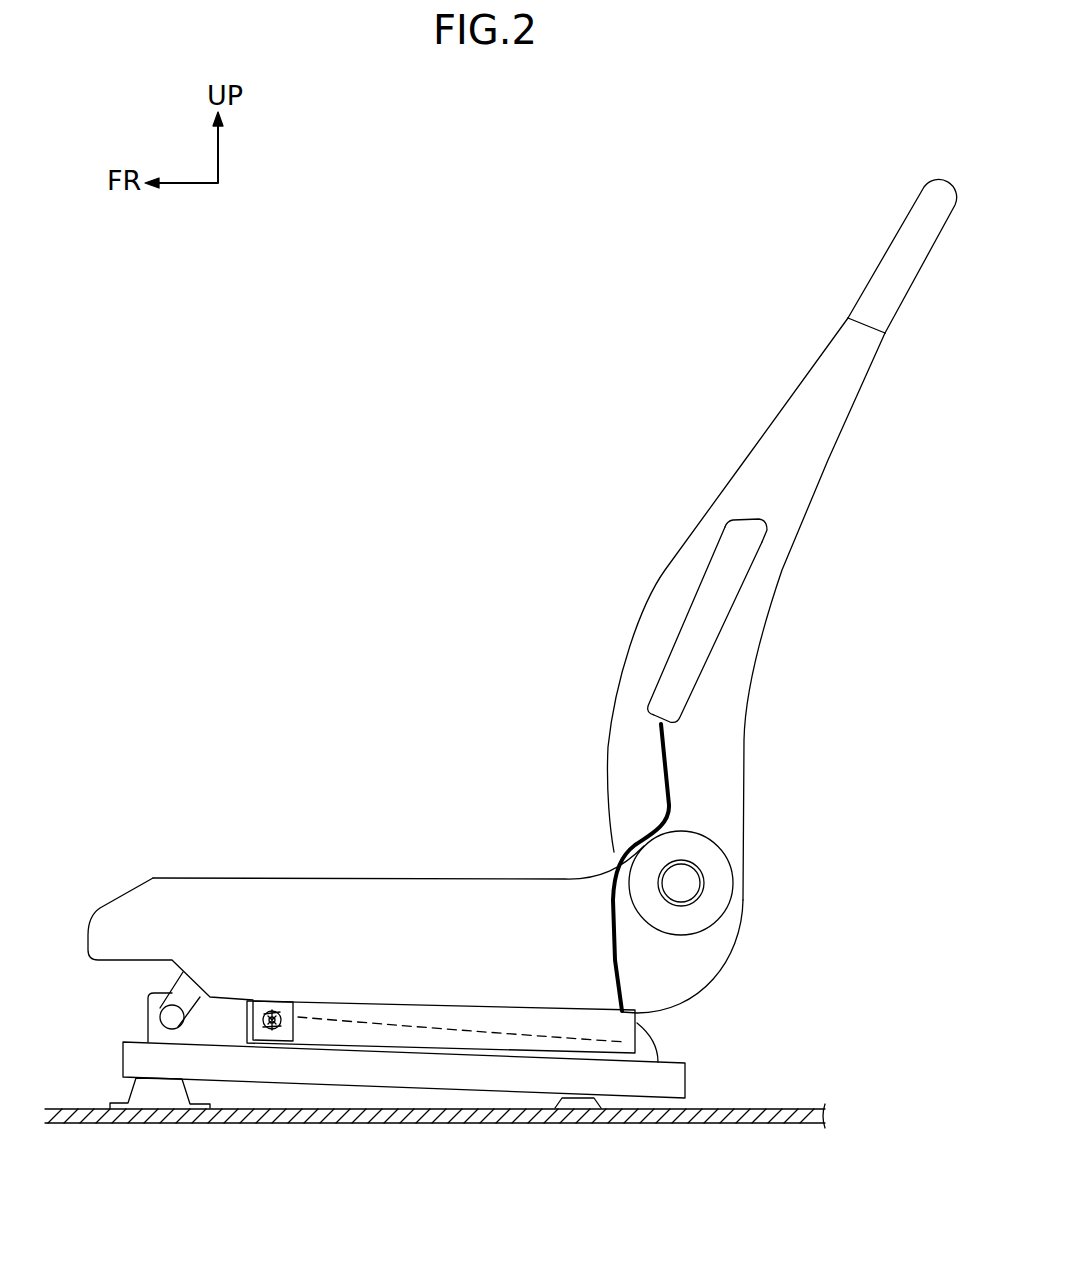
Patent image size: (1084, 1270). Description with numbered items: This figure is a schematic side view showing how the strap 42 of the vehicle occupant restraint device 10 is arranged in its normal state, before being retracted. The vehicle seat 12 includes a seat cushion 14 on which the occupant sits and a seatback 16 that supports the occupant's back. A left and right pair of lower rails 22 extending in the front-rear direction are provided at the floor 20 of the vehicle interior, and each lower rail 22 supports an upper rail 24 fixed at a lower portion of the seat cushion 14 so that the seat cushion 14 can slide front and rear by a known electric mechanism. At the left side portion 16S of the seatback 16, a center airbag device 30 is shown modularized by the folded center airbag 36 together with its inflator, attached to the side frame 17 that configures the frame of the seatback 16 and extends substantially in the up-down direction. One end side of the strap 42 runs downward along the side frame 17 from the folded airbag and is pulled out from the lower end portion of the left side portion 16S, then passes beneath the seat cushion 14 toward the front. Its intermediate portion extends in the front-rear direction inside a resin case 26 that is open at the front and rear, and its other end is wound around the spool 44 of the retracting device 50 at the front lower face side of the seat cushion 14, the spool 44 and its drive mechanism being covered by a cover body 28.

The vehicle occupant restraint device 10 is at (527, 432).
The vehicle seat 12 is at (884, 185).
The seat cushion 14 is at (142, 857).
The seatback 16 is at (845, 467).
The left side portion 16S is at (722, 710).
The side frame 17 is at (802, 495).
The floor 20 is at (763, 1108).
The lower rail 22 is at (687, 1087).
The upper rail 24 is at (648, 1045).
The case 26 is at (458, 1022).
The cover body 28 is at (250, 1030).
The center airbag device 30 is at (755, 594).
The center airbag 36 is at (750, 521).
The strap 42 is at (668, 777).
The spool 44 is at (273, 1023).
The retracting device 50 is at (269, 985).